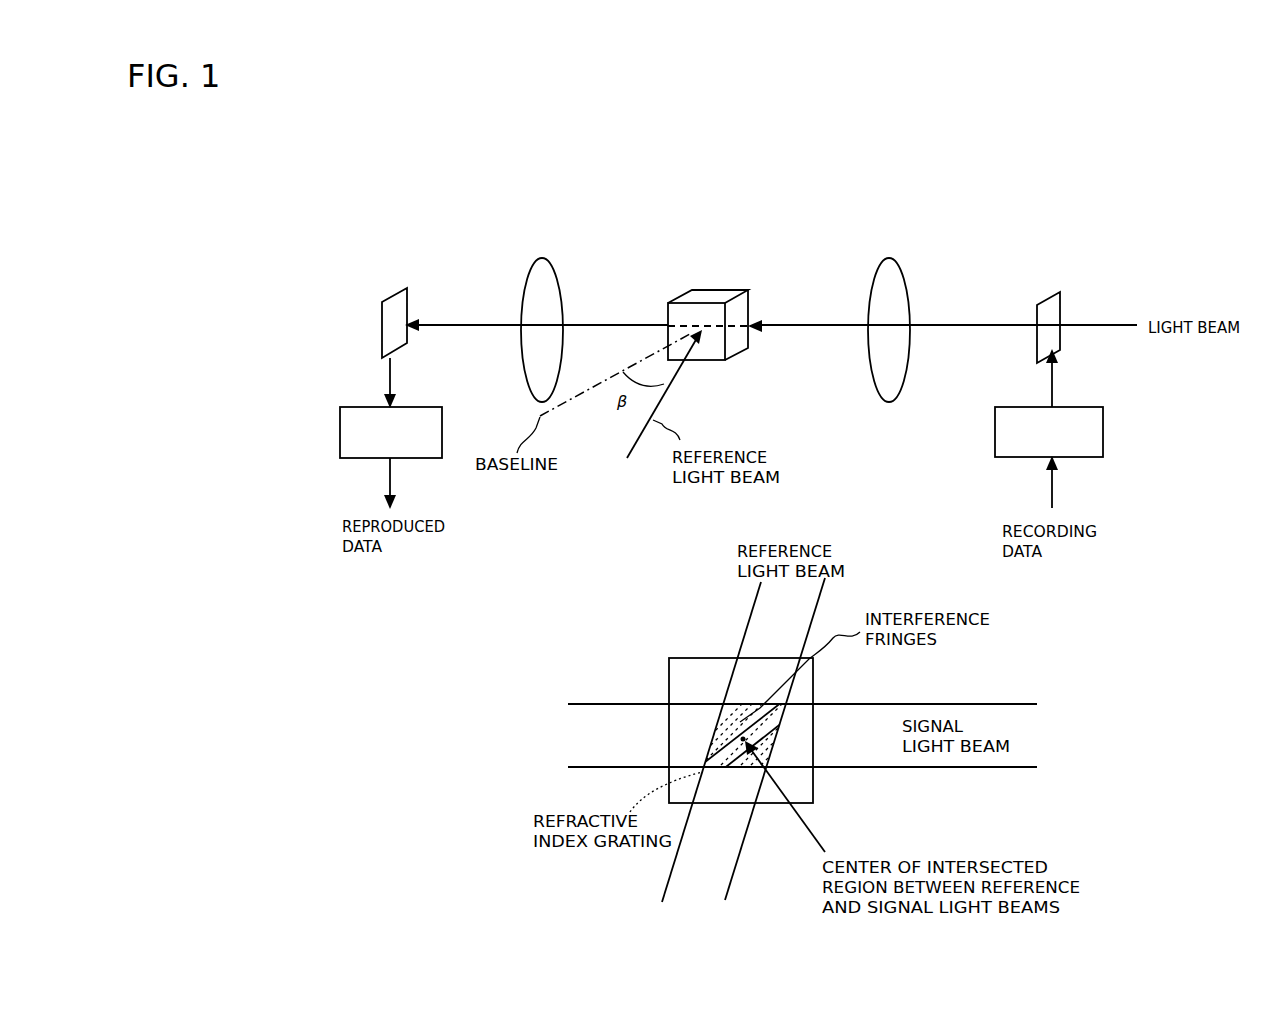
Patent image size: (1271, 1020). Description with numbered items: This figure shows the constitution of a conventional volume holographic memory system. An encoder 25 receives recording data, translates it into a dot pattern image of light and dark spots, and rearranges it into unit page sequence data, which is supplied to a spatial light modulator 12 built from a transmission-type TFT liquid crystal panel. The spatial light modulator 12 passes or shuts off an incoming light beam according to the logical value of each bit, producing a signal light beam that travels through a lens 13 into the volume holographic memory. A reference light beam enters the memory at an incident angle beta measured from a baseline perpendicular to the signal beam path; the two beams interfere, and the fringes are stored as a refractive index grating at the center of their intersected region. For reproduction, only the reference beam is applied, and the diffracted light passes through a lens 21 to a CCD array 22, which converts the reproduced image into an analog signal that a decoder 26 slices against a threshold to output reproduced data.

The spatial light modulator 12 is at (1050, 300).
The lens 13 is at (890, 267).
The lens 21 is at (547, 270).
The CCD array 22 is at (402, 308).
The encoder 25 is at (1105, 422).
The decoder 26 is at (340, 434).